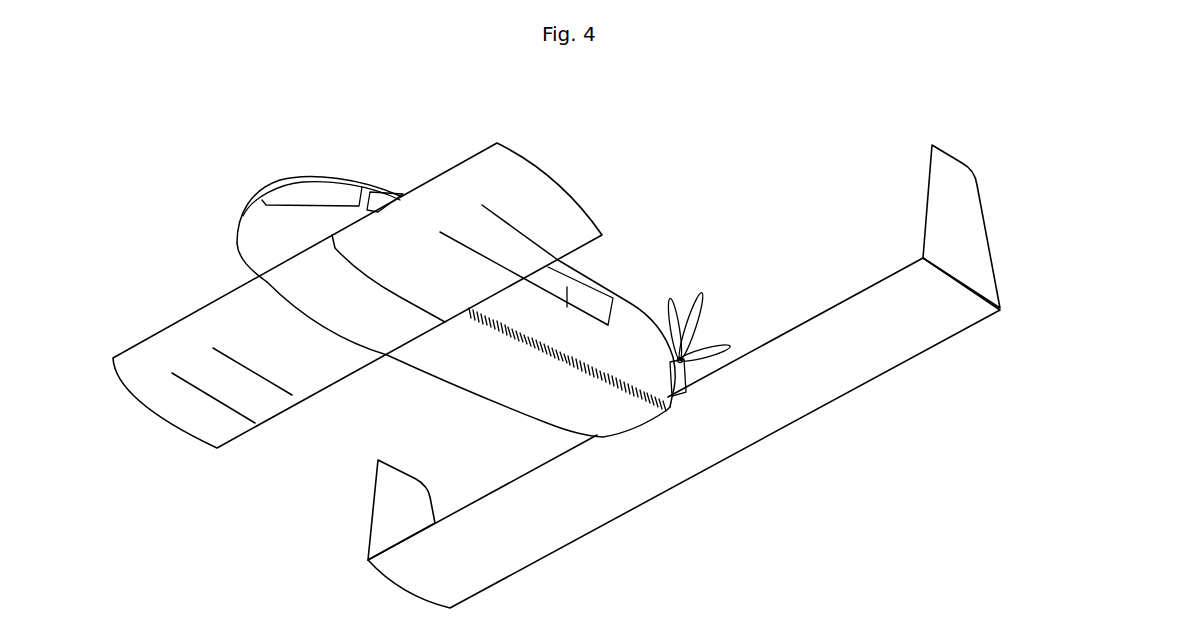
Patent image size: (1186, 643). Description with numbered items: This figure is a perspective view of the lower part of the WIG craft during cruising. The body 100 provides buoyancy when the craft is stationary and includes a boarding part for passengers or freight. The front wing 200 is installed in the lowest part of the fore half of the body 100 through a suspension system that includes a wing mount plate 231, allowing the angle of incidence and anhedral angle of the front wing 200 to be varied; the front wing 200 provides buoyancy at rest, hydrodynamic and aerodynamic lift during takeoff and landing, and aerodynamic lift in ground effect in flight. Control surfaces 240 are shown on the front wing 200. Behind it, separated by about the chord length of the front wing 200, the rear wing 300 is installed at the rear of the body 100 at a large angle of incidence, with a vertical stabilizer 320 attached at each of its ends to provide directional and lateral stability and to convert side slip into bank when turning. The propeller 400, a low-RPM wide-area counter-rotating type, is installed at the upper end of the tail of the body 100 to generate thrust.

The body 100 is at (263, 245).
The front wing 200 is at (500, 184).
The wing mount plate 231 is at (372, 320).
The control surface (flap/aileron) 240 is at (473, 253).
The rear wing 300 is at (797, 392).
The vertical stabilizer 320 is at (943, 208).
The propeller 400 is at (703, 285).